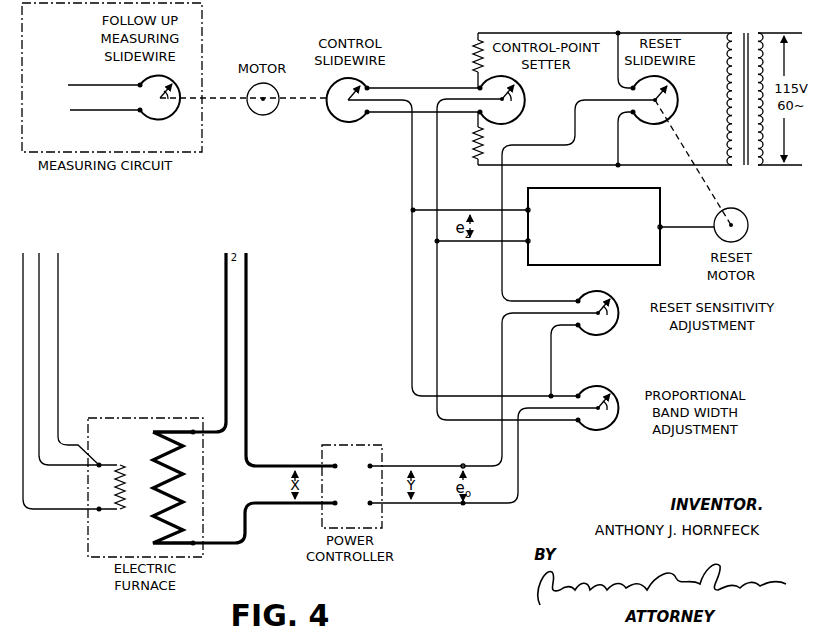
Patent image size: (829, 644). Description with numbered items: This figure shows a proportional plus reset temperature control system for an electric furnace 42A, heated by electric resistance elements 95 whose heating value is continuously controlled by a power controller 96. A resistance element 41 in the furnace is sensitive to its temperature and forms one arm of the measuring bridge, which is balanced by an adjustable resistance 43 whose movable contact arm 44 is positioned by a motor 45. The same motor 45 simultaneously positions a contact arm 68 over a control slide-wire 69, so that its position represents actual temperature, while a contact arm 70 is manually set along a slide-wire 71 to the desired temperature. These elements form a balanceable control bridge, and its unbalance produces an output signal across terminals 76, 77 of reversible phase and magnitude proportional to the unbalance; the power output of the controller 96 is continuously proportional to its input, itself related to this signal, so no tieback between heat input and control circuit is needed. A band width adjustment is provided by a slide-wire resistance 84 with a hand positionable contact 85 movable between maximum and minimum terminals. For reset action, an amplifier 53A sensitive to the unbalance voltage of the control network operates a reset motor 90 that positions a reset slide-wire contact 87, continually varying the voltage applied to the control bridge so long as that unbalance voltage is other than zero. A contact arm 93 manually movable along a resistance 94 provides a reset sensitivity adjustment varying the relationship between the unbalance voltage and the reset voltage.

The resistance element 41 is at (123, 476).
The furnace 42A is at (145, 477).
The adjustable resistance 43 is at (157, 121).
The movable contact arm 44 is at (156, 93).
The motor 45 is at (268, 115).
The amplifier 53A is at (594, 226).
The contact arm 68 is at (341, 89).
The slide-wire 69 is at (356, 122).
The contact arm 70 is at (499, 112).
The slide-wire 71 is at (527, 93).
The terminal 76 is at (462, 457).
The terminal 77 is at (462, 514).
The slide-wire resistance 84 is at (602, 386).
The hand positionable contact 85 is at (597, 420).
The reset slide-wire contact 87 is at (655, 100).
The reset motor 90 is at (748, 219).
The contact arm 93 is at (597, 325).
The resistance 94 is at (620, 300).
The electric resistance elements 95 is at (155, 518).
The power controller 96 is at (352, 513).